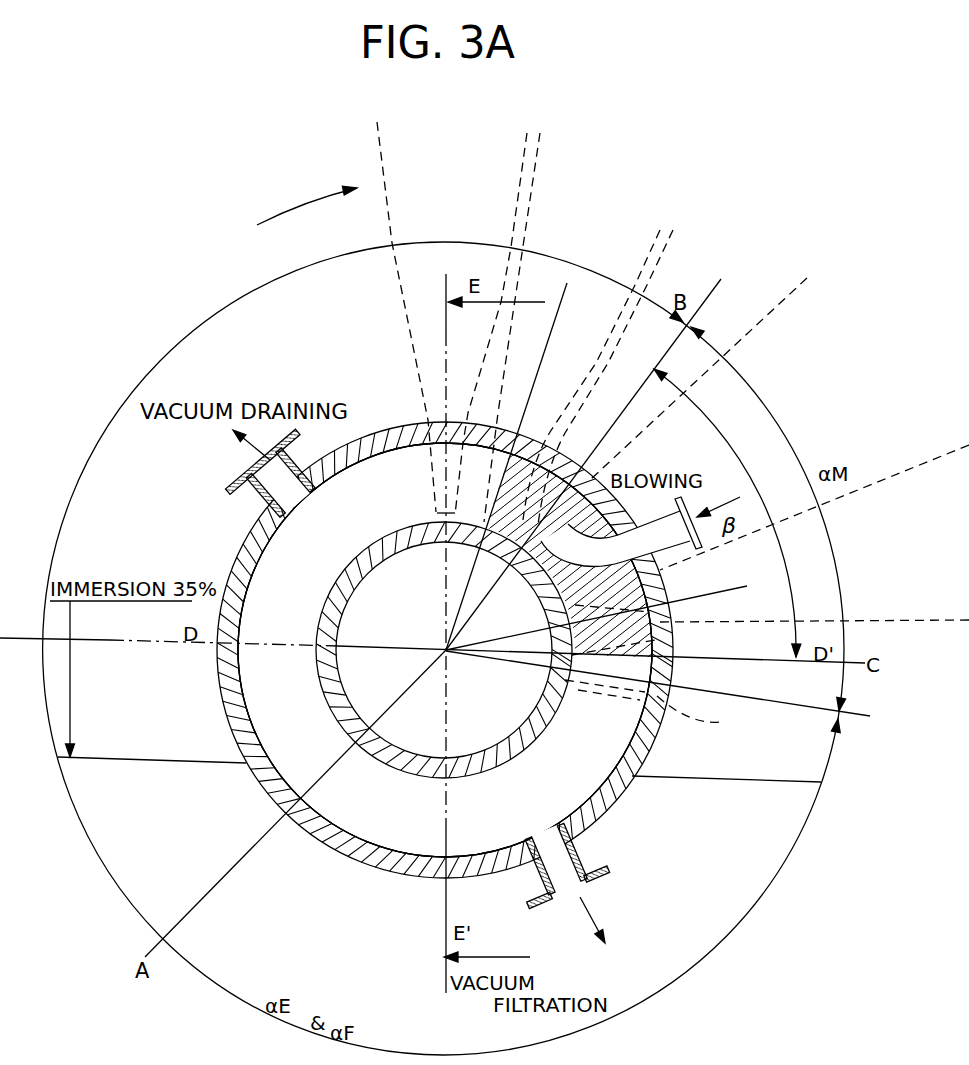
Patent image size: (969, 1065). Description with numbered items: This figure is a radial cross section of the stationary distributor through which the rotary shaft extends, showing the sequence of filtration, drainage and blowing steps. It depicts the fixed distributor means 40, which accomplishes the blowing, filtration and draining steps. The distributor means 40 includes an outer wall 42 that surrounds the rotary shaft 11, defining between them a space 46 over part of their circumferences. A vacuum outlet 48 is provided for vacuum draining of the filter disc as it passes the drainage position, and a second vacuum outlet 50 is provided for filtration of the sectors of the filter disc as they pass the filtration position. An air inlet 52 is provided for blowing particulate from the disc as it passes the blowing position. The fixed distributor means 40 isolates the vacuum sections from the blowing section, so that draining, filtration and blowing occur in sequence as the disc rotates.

The rotary shaft 11 is at (340, 732).
The fixed distributor means 40 is at (250, 785).
The outer wall 42 is at (327, 850).
The space 46 is at (418, 845).
The vacuum outlet 48 is at (250, 472).
The vacuum outlet 50 is at (590, 882).
The air inlet 52 is at (703, 503).